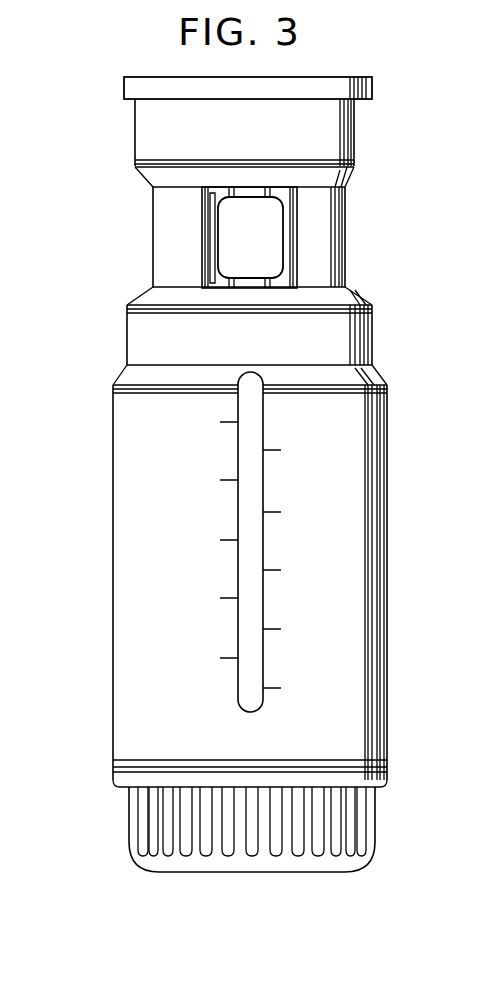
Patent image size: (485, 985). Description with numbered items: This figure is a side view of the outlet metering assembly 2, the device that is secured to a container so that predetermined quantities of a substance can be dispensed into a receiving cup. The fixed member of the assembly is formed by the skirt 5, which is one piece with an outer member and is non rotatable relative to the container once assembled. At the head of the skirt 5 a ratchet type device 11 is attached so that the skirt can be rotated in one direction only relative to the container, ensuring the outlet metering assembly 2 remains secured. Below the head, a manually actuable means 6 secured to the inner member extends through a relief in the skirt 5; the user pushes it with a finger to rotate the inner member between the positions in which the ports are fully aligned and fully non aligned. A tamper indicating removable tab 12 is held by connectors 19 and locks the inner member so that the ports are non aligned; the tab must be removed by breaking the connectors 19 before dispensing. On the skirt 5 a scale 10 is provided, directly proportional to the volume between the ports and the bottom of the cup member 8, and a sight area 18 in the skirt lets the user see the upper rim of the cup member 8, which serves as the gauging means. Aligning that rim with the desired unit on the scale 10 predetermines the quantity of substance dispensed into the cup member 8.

The outlet metering assembly 2 is at (90, 554).
The skirt 5 is at (350, 488).
The manually actuable means 6 is at (213, 236).
The cup member 8 is at (358, 824).
The scale 10 is at (277, 597).
The ratchet type device 11 is at (371, 88).
The removable tab 12 is at (251, 207).
The sight area 18 is at (245, 505).
The connectors 19 is at (283, 237).